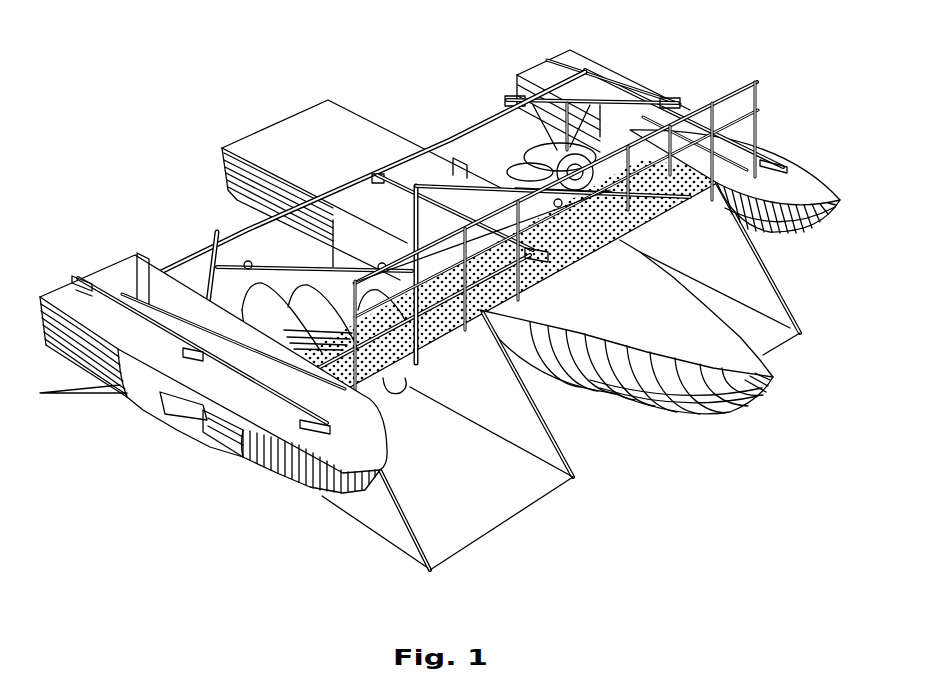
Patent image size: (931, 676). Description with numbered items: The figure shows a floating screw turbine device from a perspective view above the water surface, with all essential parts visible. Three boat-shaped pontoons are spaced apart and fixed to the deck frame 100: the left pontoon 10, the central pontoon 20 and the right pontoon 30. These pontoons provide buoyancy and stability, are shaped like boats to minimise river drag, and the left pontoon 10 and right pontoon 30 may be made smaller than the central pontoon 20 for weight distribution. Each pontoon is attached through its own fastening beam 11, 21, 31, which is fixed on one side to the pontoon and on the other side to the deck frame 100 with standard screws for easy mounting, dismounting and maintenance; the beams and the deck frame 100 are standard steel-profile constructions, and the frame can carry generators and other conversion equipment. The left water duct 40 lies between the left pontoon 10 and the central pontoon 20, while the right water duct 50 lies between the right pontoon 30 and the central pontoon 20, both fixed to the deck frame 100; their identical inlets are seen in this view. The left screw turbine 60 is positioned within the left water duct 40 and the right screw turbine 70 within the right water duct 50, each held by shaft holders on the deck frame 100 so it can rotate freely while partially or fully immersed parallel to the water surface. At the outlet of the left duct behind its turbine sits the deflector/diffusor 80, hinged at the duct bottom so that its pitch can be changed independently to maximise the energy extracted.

The left pontoon 10 is at (118, 272).
The fastening beam 11 is at (78, 278).
The central pontoon 20 is at (295, 130).
The fastening beam 21 is at (533, 256).
The right pontoon 30 is at (578, 60).
The fastening beam 31 is at (770, 165).
The left water duct 40 is at (483, 503).
The right water duct 50 is at (767, 332).
The left screw turbine 60 is at (395, 385).
The right screw turbine 70 is at (538, 155).
The deflector/diffusor 80 is at (82, 392).
The deck frame 100 is at (247, 230).